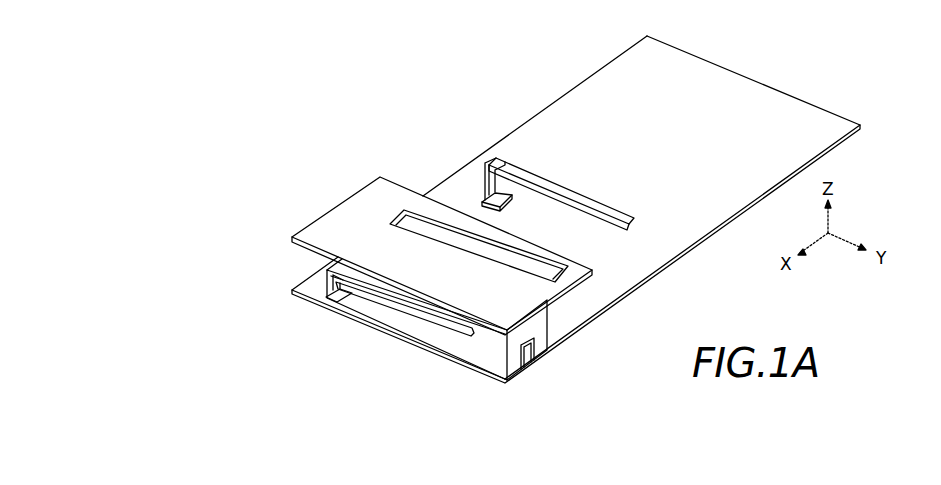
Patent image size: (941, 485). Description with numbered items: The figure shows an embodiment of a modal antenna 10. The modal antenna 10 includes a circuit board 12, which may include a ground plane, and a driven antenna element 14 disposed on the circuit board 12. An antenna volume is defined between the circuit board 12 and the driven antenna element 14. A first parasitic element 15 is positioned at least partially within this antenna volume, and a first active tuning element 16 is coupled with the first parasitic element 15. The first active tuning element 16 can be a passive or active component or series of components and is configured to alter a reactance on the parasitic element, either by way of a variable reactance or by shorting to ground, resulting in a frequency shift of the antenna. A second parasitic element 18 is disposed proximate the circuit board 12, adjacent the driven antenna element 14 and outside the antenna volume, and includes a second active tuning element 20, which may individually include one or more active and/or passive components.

The modal antenna 10 is at (222, 78).
The circuit board 12 is at (545, 120).
The driven antenna element 14 is at (337, 207).
The first parasitic element 15 is at (423, 313).
The first active tuning element 16 is at (333, 301).
The second parasitic element 18 is at (572, 198).
The second active tuning element 20 is at (500, 198).